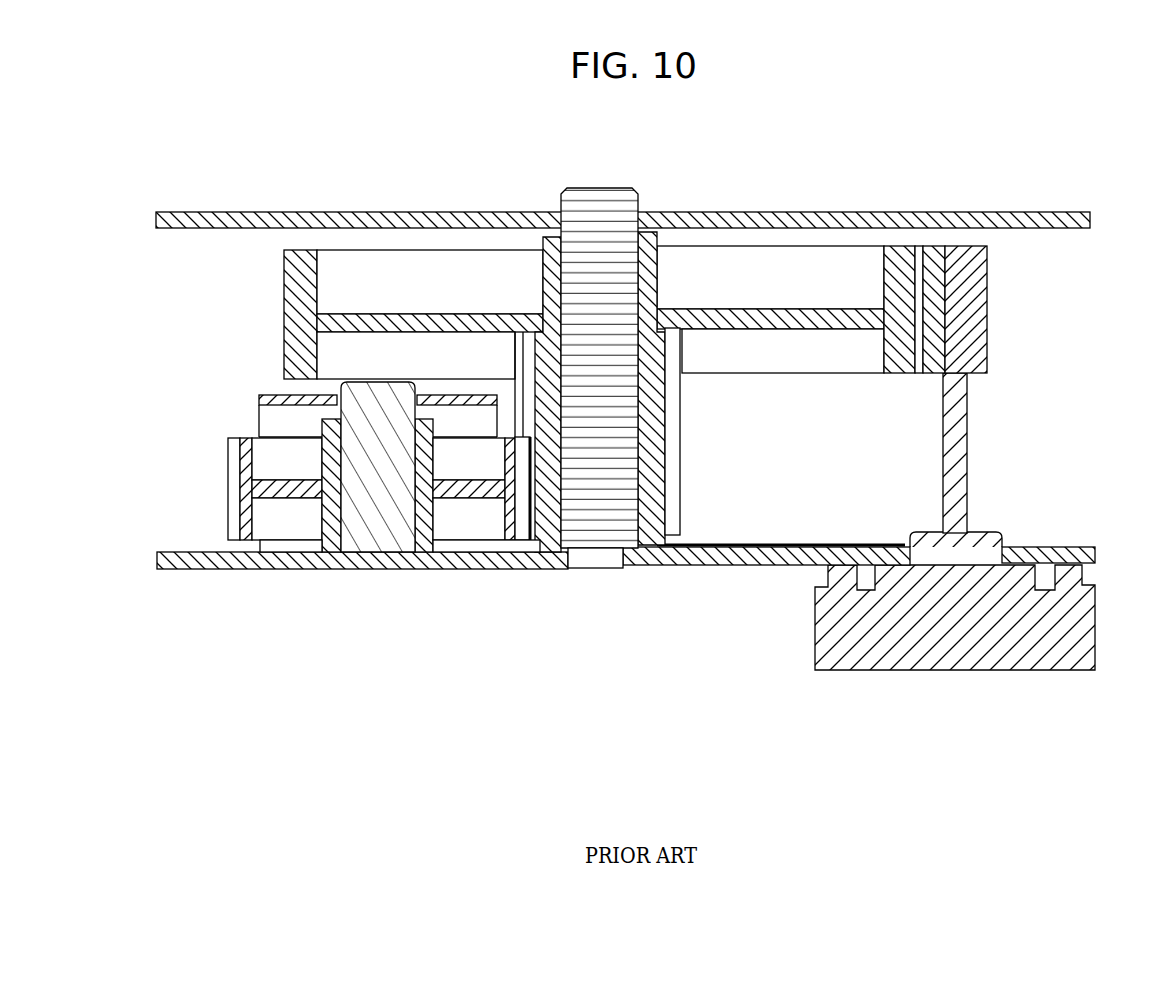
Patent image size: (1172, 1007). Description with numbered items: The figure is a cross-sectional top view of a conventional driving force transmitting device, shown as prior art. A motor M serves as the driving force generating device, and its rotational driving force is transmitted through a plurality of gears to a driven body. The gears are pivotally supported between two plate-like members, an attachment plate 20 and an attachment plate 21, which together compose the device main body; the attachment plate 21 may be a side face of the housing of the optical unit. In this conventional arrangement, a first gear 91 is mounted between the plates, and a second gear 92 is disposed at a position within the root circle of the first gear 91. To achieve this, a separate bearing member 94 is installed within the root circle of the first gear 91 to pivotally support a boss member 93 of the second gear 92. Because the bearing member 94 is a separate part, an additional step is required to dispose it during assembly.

The attachment plate 20 is at (755, 570).
The attachment plate 21 is at (509, 208).
The first gear 91 is at (797, 243).
The second gear 92 is at (226, 522).
The boss member 93 is at (356, 528).
The bearing member 94 is at (262, 395).
The motor M is at (955, 628).